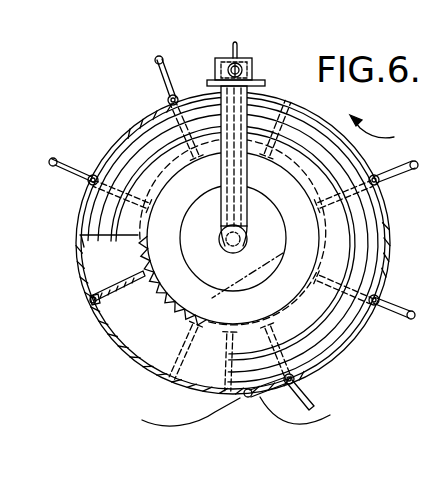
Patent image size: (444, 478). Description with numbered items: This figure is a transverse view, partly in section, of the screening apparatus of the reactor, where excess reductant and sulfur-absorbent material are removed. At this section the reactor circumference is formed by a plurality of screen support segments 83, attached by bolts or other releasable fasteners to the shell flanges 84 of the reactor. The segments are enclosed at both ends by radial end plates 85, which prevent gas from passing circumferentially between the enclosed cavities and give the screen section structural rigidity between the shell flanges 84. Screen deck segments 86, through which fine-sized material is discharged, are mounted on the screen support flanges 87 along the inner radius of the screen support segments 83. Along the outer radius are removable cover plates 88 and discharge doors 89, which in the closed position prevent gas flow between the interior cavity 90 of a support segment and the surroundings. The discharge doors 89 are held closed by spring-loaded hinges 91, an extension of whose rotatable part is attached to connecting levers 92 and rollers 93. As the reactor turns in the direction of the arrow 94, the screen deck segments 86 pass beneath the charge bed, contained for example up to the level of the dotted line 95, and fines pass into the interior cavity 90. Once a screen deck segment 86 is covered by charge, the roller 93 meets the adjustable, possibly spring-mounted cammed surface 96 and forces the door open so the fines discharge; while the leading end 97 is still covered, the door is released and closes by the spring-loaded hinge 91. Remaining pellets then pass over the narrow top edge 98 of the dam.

The screen support segments 83 is at (112, 148).
The shell flanges 84 is at (100, 220).
The radial end plates 85 is at (125, 291).
The screen deck segments 86 is at (229, 238).
The screen support flanges 87 is at (110, 256).
The removable cover plates 88 is at (130, 126).
The discharge doors 89 is at (92, 297).
The interior cavity 90 is at (106, 303).
The spring-loaded hinges 91 is at (294, 383).
The connecting levers 92 is at (281, 388).
The rollers 93 is at (248, 397).
The arrow 94 is at (387, 136).
The dotted line 95 is at (250, 277).
The cammed surface 96 is at (240, 396).
The leading end 97 is at (320, 285).
The top edge 98 is at (181, 229).